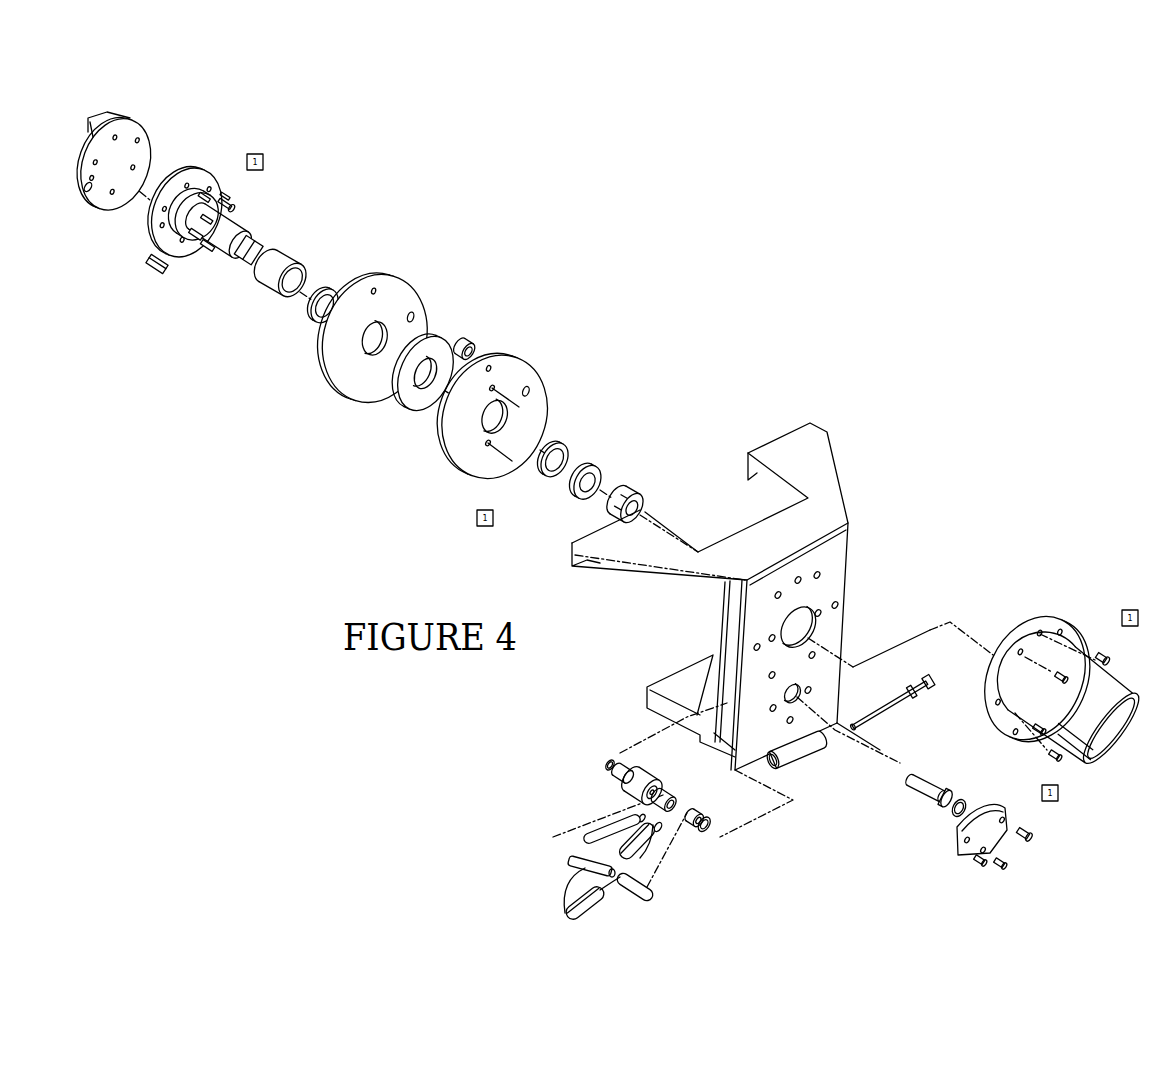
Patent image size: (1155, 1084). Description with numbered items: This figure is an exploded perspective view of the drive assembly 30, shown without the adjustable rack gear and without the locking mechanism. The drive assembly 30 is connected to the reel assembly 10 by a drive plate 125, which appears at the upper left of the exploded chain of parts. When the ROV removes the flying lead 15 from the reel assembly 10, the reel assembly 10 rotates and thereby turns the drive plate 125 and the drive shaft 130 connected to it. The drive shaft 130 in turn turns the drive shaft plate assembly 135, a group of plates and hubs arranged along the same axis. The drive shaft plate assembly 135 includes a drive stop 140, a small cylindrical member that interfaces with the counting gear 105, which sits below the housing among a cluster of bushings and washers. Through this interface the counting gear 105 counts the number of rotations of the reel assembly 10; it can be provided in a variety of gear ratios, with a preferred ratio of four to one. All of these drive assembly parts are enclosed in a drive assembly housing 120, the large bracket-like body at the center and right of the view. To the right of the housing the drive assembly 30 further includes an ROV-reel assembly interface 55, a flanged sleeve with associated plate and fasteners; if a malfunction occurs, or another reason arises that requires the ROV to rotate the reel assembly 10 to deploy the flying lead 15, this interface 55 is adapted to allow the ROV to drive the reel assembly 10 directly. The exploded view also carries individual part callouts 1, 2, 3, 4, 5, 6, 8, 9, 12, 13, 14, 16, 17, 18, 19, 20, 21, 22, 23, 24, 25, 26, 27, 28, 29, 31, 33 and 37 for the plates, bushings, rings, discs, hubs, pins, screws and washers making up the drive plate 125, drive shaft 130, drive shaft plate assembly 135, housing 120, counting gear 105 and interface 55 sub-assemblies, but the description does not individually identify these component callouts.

The mounting plate 1 is at (108, 112).
The bushing 2 is at (299, 258).
The flange hub 3 is at (201, 172).
The key 4 is at (150, 268).
The bearing ring 5 is at (312, 316).
The disc 6 is at (408, 280).
The hub 8 is at (399, 393).
The spacer cylinder 9 is at (473, 340).
The reel assembly 10 is at (526, 357).
The washer 12 is at (598, 463).
The nut 13 is at (641, 492).
The frame bracket 14 is at (823, 427).
The flying lead 15 is at (1054, 623).
The rod 16 is at (935, 672).
The pin 17 is at (926, 780).
The washer 18 is at (966, 800).
The plate 19 is at (1005, 808).
The bushing 20 is at (669, 795).
The roller 21 is at (651, 782).
The bushing 22 is at (626, 768).
The washer 23 is at (606, 770).
The bushing 24 is at (705, 813).
The washer 25 is at (702, 838).
The pin 26 is at (661, 823).
The cross bracket 27 is at (583, 926).
The bolt 28 is at (512, 464).
The bushing 29 is at (86, 190).
The drive assembly 30 is at (236, 198).
The screw 31 is at (1032, 832).
The collar 33 is at (933, 680).
The screw 37 is at (1108, 655).
The ROV-reel assembly interface 55 is at (1100, 767).
The counting gear 105 is at (635, 903).
The drive assembly housing 120 is at (833, 465).
The drive plate 125 is at (96, 207).
The drive shaft 130 is at (217, 237).
The drive shaft plate assembly 135 is at (313, 398).
The drive stop 140 is at (467, 338).